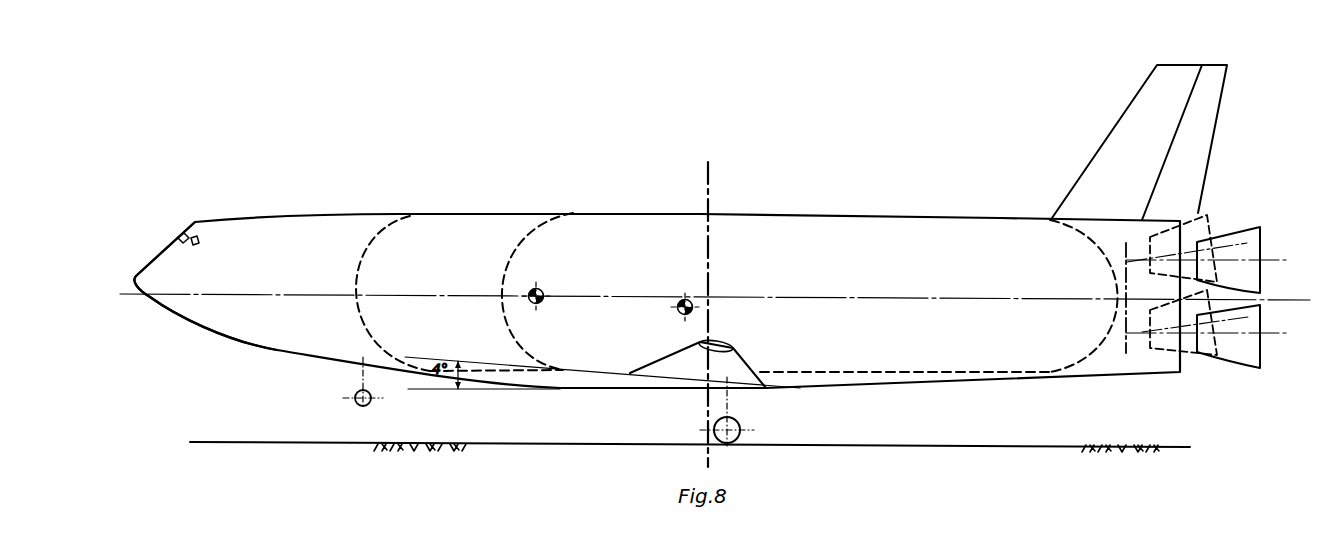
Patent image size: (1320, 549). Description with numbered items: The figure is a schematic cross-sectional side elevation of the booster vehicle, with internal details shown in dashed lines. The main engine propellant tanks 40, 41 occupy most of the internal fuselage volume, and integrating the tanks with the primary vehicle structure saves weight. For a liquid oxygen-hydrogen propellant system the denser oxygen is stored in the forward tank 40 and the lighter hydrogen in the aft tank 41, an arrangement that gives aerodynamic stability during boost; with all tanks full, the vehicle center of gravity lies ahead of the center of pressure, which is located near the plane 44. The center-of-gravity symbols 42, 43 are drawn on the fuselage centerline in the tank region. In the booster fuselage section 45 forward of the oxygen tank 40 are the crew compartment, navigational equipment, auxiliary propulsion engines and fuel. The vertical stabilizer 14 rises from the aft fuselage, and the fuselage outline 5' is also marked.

The fuselage 5' is at (657, 285).
The vertical stabilizer 14 is at (1165, 134).
The forward main engine propellant tank 40 is at (446, 258).
The aft main engine propellant tank 41 is at (610, 250).
The forward center of gravity position 42 is at (531, 289).
The aft center of gravity position 43 is at (680, 301).
The plane 44 is at (710, 229).
The booster fuselage section 45 is at (278, 259).